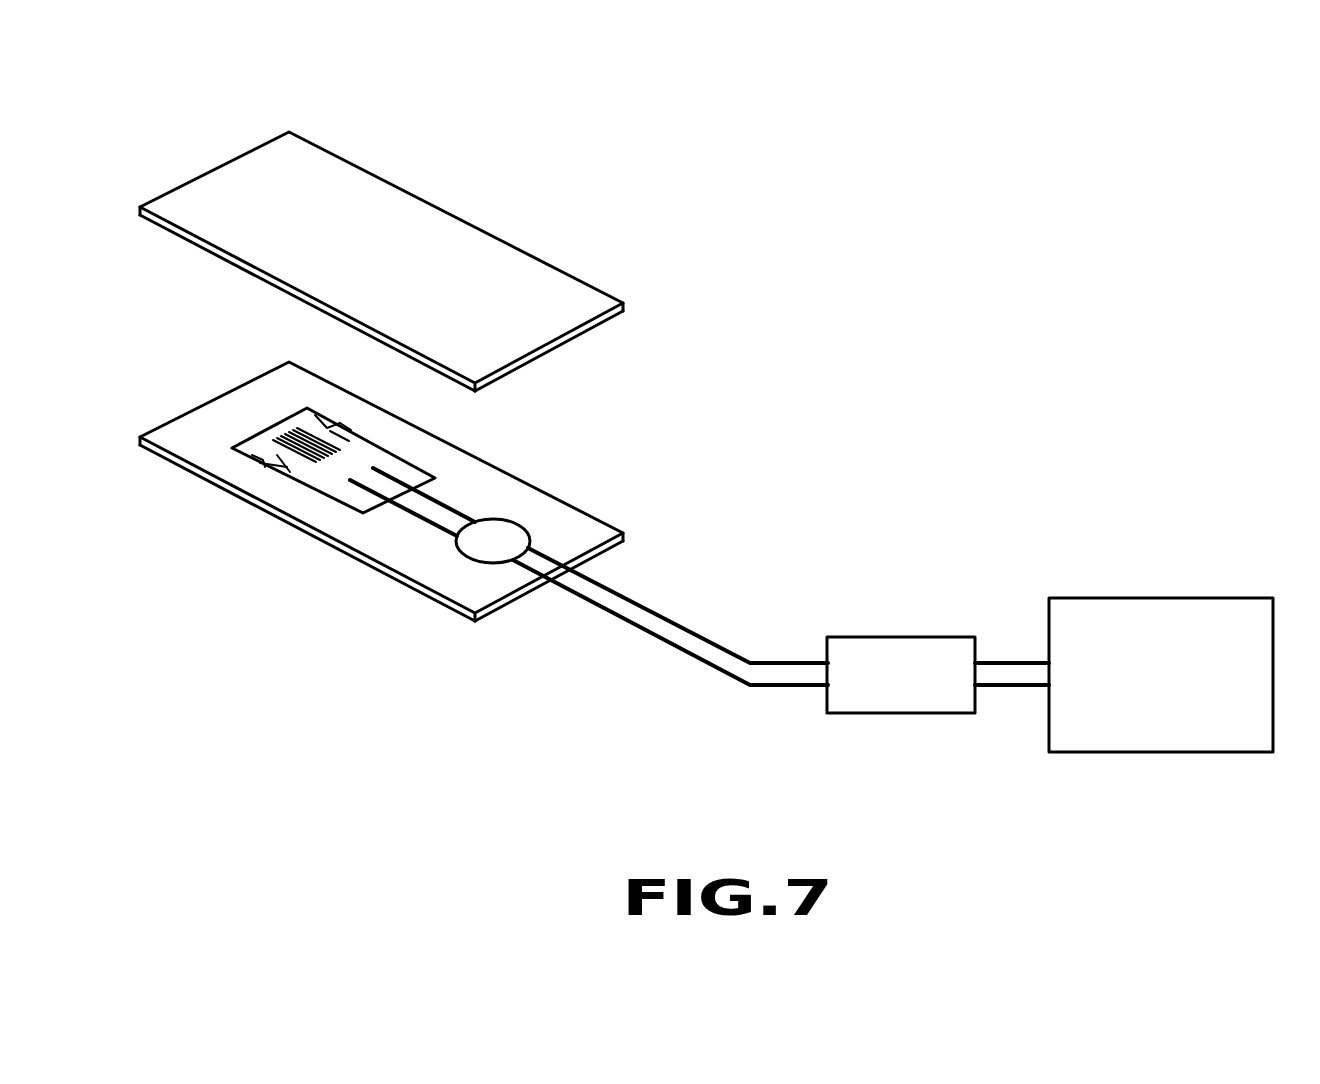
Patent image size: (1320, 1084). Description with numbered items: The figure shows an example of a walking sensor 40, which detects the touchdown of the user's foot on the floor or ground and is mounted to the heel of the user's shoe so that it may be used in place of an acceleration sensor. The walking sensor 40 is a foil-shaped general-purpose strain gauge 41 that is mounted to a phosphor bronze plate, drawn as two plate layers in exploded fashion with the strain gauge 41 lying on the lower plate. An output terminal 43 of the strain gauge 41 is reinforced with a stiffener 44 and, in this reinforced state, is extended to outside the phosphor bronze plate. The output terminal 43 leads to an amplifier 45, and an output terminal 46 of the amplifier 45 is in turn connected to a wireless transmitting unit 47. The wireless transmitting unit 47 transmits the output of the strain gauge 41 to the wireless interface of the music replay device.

The walking sensor 40 is at (760, 226).
The foil-shaped general-purpose strain gauge 41 is at (267, 457).
The output terminal 43 is at (660, 610).
The stiffener 44 is at (505, 532).
The amplifier 45 is at (900, 637).
The output terminal 46 is at (1010, 687).
The wireless transmitting unit 47 is at (1160, 598).